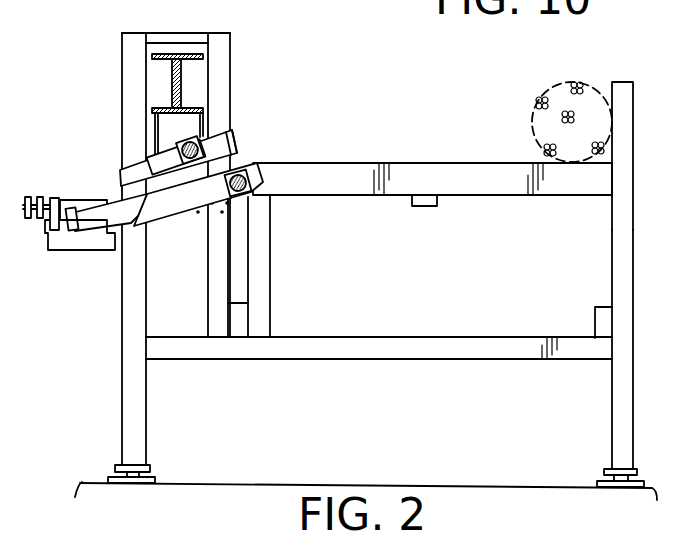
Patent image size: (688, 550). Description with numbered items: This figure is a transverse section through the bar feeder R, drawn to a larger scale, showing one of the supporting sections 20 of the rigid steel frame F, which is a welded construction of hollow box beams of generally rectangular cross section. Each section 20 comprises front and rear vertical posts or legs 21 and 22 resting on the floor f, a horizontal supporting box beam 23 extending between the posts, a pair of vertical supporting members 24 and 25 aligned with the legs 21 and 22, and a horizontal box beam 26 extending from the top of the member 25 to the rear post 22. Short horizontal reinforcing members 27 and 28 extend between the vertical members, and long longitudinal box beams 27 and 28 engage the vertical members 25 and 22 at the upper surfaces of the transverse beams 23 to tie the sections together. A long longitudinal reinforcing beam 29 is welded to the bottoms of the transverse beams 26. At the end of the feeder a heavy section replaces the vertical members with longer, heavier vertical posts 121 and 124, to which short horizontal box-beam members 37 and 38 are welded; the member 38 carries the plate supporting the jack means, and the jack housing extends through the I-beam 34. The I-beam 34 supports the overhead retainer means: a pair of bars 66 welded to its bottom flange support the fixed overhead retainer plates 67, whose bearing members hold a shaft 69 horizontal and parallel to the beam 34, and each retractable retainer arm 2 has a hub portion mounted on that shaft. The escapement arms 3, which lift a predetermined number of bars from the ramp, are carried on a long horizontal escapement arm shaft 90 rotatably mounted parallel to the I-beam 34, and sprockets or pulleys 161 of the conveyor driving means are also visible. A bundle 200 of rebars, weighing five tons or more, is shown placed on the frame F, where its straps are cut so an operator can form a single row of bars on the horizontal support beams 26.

The retractable retainer arm 2 is at (127, 175).
The escapement arm 3 is at (97, 218).
The supporting section 20 is at (125, 379).
The front vertical post 21 is at (128, 315).
The rear vertical post 22 is at (623, 262).
The horizontal supporting box beam 23 is at (415, 345).
The vertical supporting member 24 is at (217, 292).
The vertical supporting member 25 is at (260, 275).
The horizontal box beam 26 is at (375, 188).
The horizontal reinforcing member 27 is at (240, 323).
The horizontal reinforcing member 28 is at (603, 325).
The longitudinal reinforcing beam 29 is at (422, 203).
The I-beam 34 is at (183, 82).
The horizontal box-beam member 37 is at (162, 37).
The horizontal box-beam member 38 is at (197, 222).
The bar 66 is at (153, 128).
The fixed overhead retainer plate 67 is at (230, 130).
The shaft 69 is at (238, 144).
The escapement arm shaft 90 is at (243, 195).
The vertical post 121 is at (132, 80).
The vertical post 124 is at (222, 92).
The sprocket or pulley 161 is at (38, 195).
The bundle 200 is at (562, 95).
The bar feeder R is at (117, 52).
The rigid steel frame F is at (638, 207).
The floor f is at (529, 487).